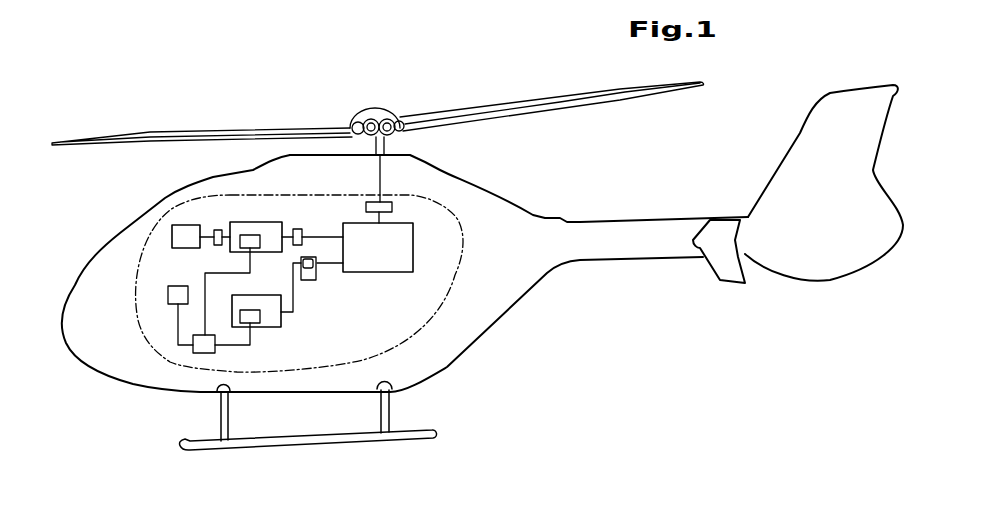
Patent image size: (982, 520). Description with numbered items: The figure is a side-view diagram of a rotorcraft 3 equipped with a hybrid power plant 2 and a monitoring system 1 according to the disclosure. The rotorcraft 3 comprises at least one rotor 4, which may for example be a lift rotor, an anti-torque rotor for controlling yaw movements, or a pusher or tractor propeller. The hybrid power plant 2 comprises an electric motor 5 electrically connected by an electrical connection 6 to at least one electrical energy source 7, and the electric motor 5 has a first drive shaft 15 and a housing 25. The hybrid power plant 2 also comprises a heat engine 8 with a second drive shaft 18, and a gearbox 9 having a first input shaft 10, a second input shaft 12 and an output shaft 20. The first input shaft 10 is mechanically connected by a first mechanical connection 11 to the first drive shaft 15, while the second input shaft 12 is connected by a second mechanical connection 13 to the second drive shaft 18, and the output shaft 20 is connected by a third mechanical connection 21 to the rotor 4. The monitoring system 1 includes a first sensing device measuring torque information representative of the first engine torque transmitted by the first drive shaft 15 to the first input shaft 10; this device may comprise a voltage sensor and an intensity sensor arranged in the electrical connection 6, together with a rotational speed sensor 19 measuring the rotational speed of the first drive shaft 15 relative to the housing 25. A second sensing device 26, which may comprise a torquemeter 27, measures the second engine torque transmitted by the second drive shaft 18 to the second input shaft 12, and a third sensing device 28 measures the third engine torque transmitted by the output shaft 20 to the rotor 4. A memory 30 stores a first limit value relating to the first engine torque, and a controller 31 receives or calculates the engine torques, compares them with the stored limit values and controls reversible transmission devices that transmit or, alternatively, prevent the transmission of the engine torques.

The monitoring system 1 is at (147, 328).
The hybrid power plant 2 is at (383, 285).
The rotorcraft 3 is at (552, 292).
The rotor 4 is at (562, 110).
The electric motor 5 is at (237, 251).
The electrical connection 6 is at (203, 226).
The electrical energy source 7 is at (118, 240).
The heat engine 8 is at (268, 327).
The gearbox 9 is at (414, 258).
The first input shaft 10 is at (385, 202).
The first mechanical connection 11 is at (333, 237).
The second input shaft 12 is at (335, 290).
The second mechanical connection 13 is at (317, 266).
The first drive shaft 15 is at (297, 229).
The second drive shaft 18 is at (295, 295).
The rotational speed sensor 19 is at (313, 237).
The output shaft 20 is at (416, 211).
The third mechanical connection 21 is at (394, 206).
The housing 25 is at (257, 222).
The second sensing device 26 is at (313, 280).
The torquemeter 27 is at (309, 280).
The third sensing device 28 is at (403, 100).
The memory 30 is at (168, 292).
The controller 31 is at (193, 350).